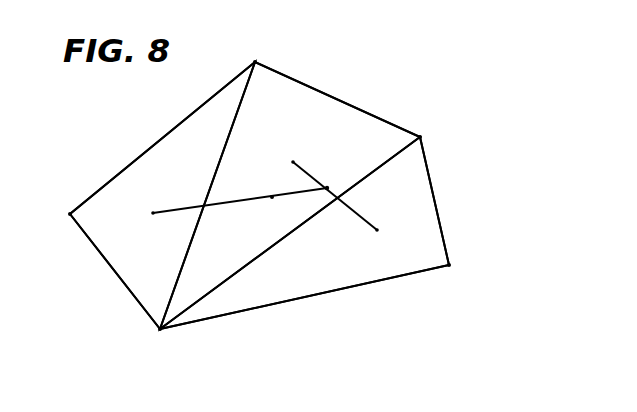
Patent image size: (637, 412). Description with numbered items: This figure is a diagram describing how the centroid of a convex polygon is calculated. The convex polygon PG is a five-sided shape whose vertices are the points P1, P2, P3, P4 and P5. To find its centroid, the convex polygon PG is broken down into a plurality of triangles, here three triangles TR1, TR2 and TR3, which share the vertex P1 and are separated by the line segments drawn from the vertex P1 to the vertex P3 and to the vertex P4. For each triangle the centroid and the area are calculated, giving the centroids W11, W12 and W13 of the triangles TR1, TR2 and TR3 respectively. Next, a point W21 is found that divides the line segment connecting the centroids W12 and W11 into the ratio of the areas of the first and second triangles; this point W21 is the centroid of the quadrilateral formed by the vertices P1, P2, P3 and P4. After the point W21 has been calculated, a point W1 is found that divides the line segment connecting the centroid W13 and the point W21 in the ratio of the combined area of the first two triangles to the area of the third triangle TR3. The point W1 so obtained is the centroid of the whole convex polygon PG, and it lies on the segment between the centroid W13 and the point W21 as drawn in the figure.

The convex polygon PG is at (388, 112).
The triangle TR1 is at (310, 284).
The triangle TR2 is at (200, 293).
The triangle TR3 is at (127, 274).
The vertex P1 is at (159, 343).
The vertex P2 is at (462, 273).
The vertex P3 is at (434, 138).
The vertex P4 is at (257, 51).
The vertex P5 is at (56, 215).
The centroid of the convex polygon W1 is at (267, 185).
The centroid of triangle W11 is at (391, 229).
The centroid of triangle W12 is at (330, 185).
The centroid of triangle W13 is at (236, 201).
The centroid of quadrilateral W21 is at (338, 178).